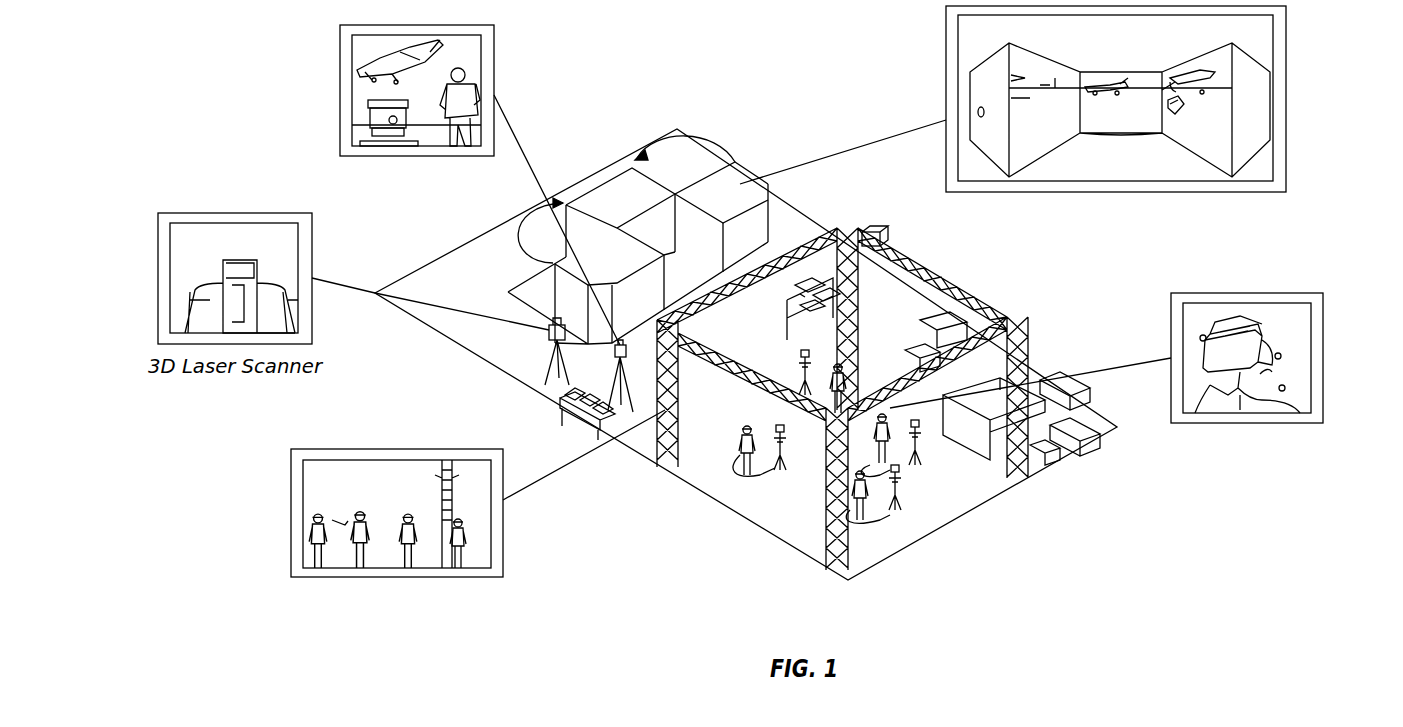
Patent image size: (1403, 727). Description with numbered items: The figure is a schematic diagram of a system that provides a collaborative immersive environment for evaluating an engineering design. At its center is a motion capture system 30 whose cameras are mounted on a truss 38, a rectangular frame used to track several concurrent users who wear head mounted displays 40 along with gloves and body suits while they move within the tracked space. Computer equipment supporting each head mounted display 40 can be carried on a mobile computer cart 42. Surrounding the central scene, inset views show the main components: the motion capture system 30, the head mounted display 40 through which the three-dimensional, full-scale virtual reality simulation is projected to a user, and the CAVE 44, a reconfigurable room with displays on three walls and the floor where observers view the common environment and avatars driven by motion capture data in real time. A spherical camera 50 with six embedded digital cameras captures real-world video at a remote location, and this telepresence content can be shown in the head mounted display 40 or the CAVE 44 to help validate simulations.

The motion capture system 30 is at (291, 508).
The truss 38 is at (823, 487).
The head mounted display 40 is at (1323, 357).
The mobile computer cart 42 is at (1010, 488).
The CAVE 44 is at (1286, 97).
The spherical camera 50 is at (340, 92).